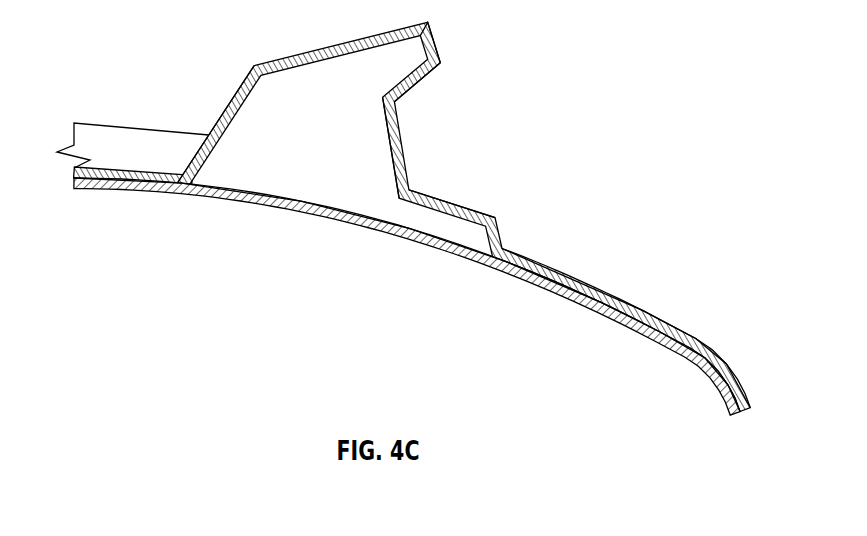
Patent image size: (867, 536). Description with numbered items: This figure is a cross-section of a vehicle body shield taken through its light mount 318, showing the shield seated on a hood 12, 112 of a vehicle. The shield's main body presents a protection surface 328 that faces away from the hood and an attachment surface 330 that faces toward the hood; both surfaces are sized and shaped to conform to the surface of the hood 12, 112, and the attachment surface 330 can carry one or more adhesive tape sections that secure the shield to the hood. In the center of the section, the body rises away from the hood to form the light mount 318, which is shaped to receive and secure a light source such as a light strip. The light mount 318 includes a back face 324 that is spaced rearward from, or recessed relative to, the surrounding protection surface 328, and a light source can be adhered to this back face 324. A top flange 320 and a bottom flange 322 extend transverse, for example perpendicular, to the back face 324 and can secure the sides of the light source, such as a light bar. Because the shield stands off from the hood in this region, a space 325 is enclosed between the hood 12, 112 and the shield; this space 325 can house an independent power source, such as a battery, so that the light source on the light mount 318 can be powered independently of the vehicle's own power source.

The hood 12 is at (407, 296).
The hood 112 is at (263, 204).
The light mount 318 is at (428, 23).
The top flange 320 is at (419, 86).
The bottom flange 322 is at (473, 207).
The back face 324 is at (408, 158).
The space 325 is at (328, 104).
The protection surface 328 is at (241, 89).
The attachment surface 330 is at (125, 190).